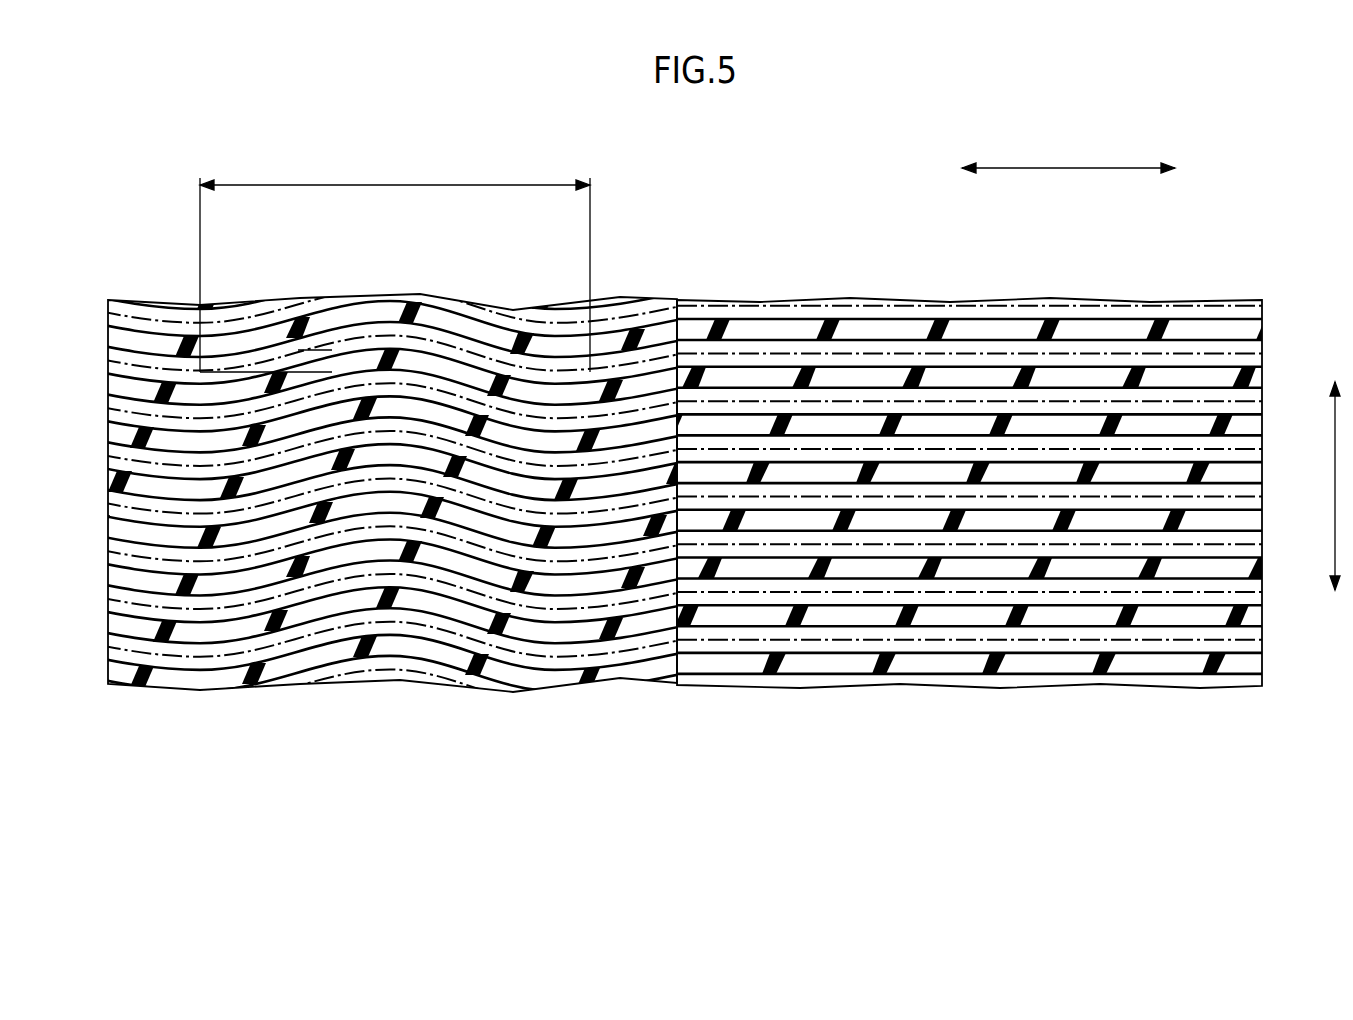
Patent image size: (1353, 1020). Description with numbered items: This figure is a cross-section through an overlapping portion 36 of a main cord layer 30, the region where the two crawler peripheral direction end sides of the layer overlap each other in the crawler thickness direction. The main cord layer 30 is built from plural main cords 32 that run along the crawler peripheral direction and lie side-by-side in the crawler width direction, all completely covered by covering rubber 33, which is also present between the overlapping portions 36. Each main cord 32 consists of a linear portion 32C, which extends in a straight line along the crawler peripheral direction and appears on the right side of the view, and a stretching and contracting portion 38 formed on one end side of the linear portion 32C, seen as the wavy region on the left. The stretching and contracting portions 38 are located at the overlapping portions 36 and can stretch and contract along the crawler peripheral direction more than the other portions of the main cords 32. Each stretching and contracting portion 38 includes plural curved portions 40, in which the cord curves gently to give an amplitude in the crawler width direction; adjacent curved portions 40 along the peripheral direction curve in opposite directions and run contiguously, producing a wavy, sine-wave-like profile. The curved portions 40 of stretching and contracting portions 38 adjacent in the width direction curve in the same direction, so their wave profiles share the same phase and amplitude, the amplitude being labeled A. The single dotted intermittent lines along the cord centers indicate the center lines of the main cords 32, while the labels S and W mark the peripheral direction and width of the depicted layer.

The main cord layer 30 is at (233, 292).
The main cord 32 is at (142, 338).
The covering rubber 33 is at (170, 343).
The overlapping portion 36 is at (1262, 726).
The stretching and contracting portion 38 is at (612, 293).
The curved portion 40 is at (182, 388).
The linear portion 32C is at (977, 318).
The amplitude A is at (334, 366).
The running direction S is at (1068, 166).
The width W is at (1333, 487).